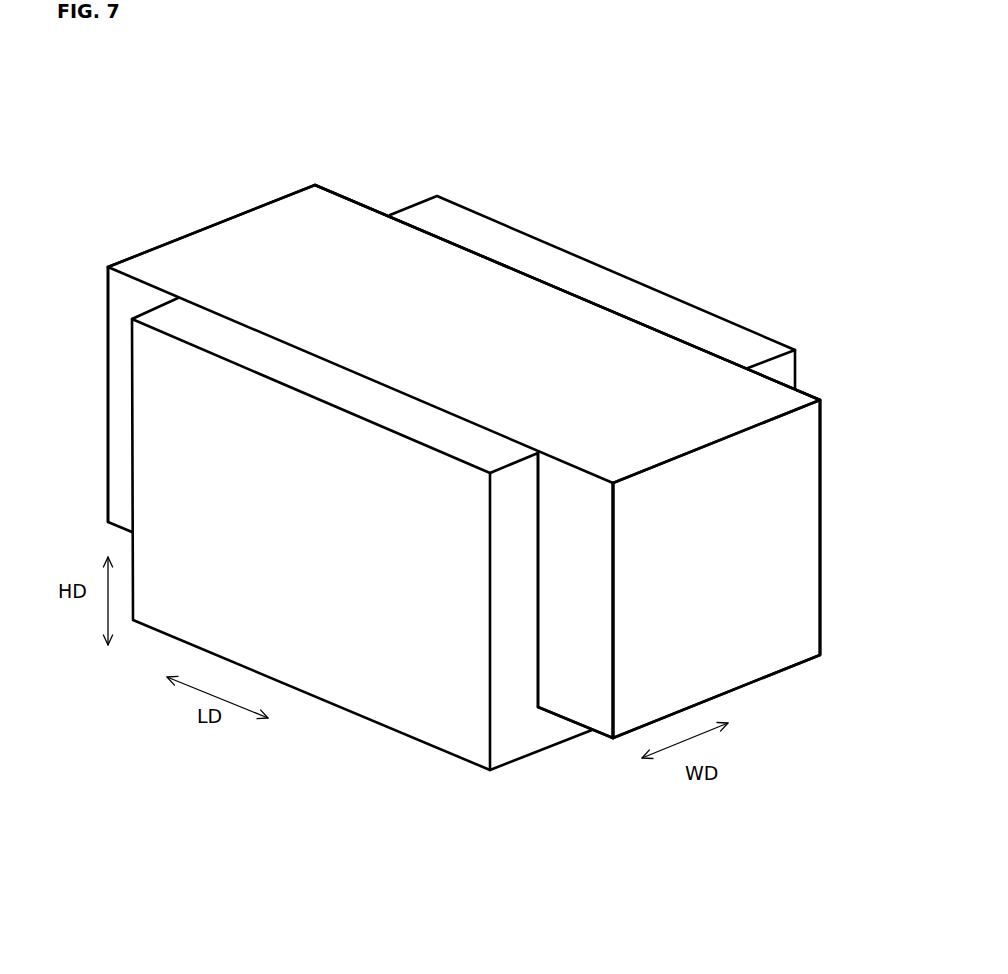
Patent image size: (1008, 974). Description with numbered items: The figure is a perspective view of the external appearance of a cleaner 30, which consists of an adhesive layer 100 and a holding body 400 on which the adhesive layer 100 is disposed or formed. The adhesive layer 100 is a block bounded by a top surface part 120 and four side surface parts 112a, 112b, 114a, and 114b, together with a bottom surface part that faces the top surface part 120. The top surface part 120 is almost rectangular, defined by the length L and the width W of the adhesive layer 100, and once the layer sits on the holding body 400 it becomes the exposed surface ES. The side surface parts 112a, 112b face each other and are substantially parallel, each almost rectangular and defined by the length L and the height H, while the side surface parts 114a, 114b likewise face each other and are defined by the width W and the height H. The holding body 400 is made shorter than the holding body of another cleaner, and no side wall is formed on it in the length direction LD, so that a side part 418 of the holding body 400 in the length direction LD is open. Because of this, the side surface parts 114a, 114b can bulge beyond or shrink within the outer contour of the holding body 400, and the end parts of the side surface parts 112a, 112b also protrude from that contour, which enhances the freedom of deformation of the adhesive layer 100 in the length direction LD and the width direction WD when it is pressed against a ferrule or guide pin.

The cleaner 30 is at (265, 135).
The adhesive layer 100 is at (473, 337).
The side surface part 112a is at (123, 295).
The side surface part 112b is at (368, 193).
The side surface part 114a is at (708, 635).
The side surface part 114b is at (187, 223).
The top surface part 120 is at (647, 390).
The holding body 400 is at (155, 482).
The side part 418 is at (550, 625).